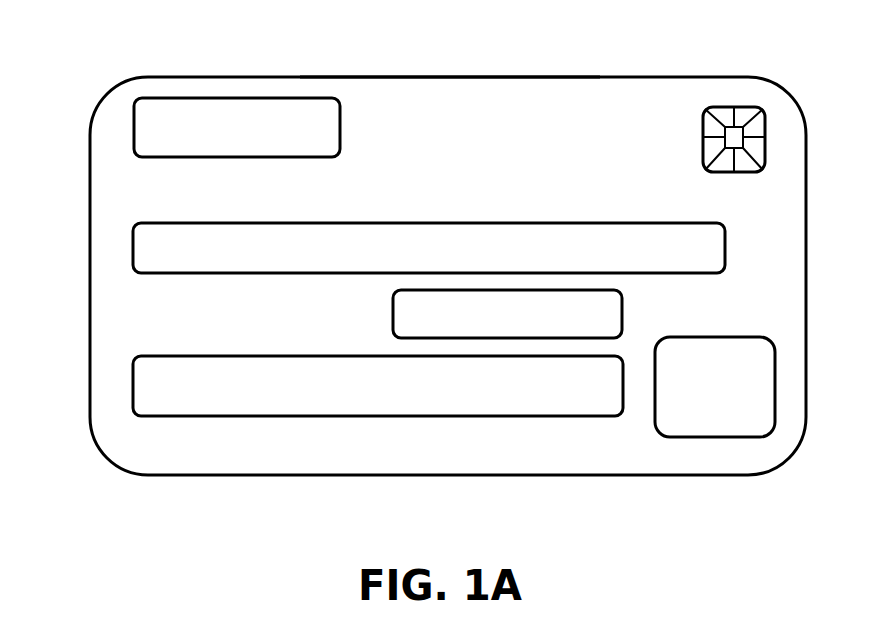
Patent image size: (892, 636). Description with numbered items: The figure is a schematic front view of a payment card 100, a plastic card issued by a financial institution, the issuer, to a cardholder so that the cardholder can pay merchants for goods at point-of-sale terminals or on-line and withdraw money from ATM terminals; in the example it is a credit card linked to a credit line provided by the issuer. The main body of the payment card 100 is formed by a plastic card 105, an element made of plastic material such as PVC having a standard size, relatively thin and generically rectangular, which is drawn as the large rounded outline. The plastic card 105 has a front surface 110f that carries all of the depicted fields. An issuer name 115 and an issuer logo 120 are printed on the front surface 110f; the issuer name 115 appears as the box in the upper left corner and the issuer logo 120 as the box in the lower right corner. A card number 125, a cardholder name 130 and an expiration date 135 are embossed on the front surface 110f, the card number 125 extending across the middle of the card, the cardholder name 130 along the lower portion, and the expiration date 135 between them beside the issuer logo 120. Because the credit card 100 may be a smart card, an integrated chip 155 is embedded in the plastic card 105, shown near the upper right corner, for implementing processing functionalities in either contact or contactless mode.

The payment card 100 is at (131, 52).
The plastic card 105 is at (530, 92).
The front surface 110f is at (645, 125).
The issuer name 115 is at (340, 128).
The issuer logo 120 is at (733, 350).
The card number 125 is at (262, 240).
The cardholder name 130 is at (233, 372).
The expiration date 135 is at (400, 313).
The integrated chip 155 is at (712, 147).